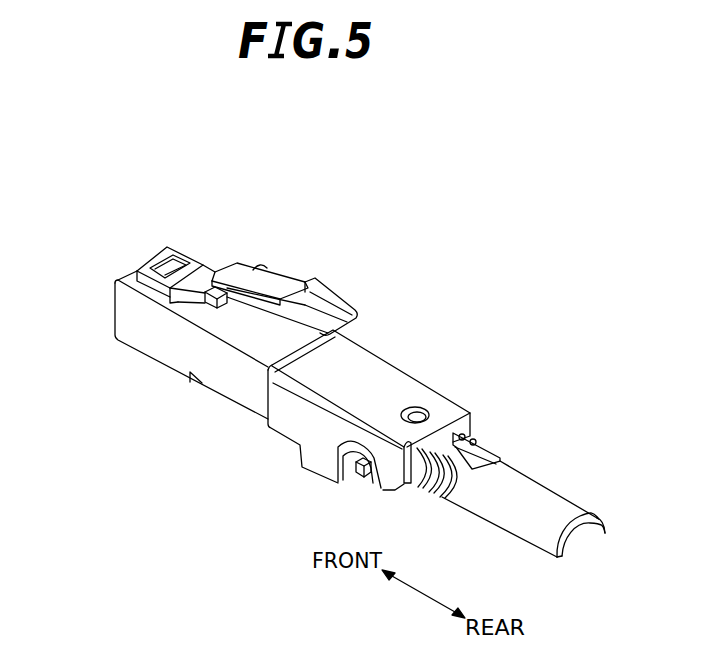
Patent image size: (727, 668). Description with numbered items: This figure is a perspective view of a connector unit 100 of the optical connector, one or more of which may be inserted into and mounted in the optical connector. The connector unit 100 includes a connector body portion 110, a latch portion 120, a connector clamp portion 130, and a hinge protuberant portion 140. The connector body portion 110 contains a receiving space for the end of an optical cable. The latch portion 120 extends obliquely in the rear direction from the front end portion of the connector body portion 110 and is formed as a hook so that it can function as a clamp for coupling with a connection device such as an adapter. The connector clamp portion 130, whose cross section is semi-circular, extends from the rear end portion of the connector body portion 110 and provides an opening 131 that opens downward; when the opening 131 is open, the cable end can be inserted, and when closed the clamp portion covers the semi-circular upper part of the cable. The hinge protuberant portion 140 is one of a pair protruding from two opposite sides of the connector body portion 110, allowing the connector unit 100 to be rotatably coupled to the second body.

The connector unit 100 is at (492, 386).
The connector body portion 110 is at (122, 309).
The latch portion 120 is at (280, 279).
The connector clamp portion 130 is at (537, 485).
The opening 131 is at (540, 555).
The hinge protuberant portion 140 is at (358, 480).